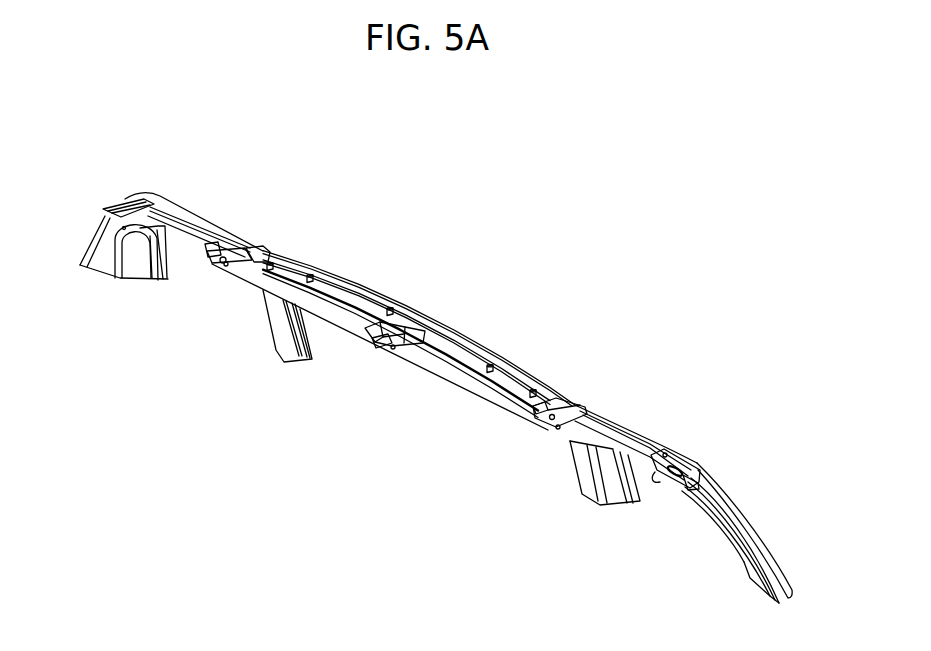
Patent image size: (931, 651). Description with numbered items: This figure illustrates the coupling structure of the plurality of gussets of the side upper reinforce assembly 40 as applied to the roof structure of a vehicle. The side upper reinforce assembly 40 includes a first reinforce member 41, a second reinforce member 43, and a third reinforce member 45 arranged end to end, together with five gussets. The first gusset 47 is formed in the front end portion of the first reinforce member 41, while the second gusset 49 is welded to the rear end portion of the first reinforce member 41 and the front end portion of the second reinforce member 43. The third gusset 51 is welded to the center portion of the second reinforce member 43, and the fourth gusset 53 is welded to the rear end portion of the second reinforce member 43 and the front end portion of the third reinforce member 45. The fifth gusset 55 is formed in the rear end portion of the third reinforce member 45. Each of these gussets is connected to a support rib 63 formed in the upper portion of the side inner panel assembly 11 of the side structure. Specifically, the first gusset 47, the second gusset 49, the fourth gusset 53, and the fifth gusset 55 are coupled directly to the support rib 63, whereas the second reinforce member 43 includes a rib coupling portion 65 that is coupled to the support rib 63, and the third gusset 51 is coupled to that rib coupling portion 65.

The side inner panel assembly 11 is at (459, 396).
The side upper reinforce assembly 40 is at (483, 345).
The first reinforce member 41 is at (618, 421).
The second reinforce member 43 is at (447, 348).
The third reinforce member 45 is at (203, 230).
The first gusset 47 is at (673, 487).
The second gusset 49 is at (561, 405).
The third gusset 51 is at (408, 323).
The fourth gusset 53 is at (231, 254).
The fifth gusset 55 is at (117, 207).
The support rib 63 is at (124, 229).
The rib coupling portion 65 is at (372, 341).